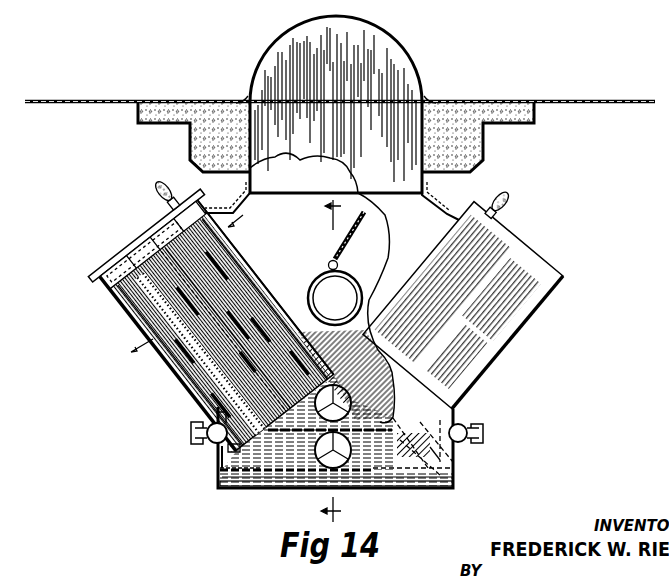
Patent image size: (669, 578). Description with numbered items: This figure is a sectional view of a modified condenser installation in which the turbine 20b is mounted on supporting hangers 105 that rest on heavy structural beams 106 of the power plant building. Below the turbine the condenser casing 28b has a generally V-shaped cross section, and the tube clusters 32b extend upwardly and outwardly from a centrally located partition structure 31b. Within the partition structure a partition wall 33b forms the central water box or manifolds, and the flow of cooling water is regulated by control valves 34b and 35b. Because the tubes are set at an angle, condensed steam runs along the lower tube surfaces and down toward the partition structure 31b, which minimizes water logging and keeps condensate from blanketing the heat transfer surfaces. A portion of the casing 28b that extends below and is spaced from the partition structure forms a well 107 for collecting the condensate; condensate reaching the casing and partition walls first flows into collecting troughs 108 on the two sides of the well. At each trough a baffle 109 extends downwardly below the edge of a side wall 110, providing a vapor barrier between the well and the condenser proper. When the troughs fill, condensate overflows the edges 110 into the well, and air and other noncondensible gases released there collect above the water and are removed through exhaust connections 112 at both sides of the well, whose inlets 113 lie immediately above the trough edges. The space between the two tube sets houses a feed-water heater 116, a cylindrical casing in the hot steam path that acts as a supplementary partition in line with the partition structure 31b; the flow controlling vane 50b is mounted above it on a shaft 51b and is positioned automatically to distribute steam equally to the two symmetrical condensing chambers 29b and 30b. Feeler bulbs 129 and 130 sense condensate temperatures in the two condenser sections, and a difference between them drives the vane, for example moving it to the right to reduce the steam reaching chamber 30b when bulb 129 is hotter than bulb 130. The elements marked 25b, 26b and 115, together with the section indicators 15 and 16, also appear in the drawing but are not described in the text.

The supporting hangers 105 is at (246, 100).
The structural beams 106 is at (193, 150).
The turbine 20b is at (343, 156).
The insulation cloud 25b is at (275, 192).
The right duct 26b is at (425, 208).
The section indicator 16 is at (190, 281).
The condensing chamber 29b is at (262, 238).
The section line 15 is at (340, 359).
The condensing chamber 30b is at (376, 232).
The flow controlling vane 50b is at (360, 239).
The shaft of the vane 51b is at (378, 268).
The tube clusters 32b is at (273, 305).
The feed-water heater 116 is at (335, 298).
The partition structure 31b is at (352, 352).
The condenser casing 28b is at (137, 309).
The stippled band 115 is at (188, 358).
The control valve 34b is at (355, 402).
The partition wall 33b is at (384, 419).
The control valve 35b is at (371, 478).
The feeder bulb 129 is at (448, 475).
The collecting troughs 108 is at (260, 486).
The well 107 is at (227, 487).
The exhaust connections 112 is at (188, 432).
The inlets 113 is at (215, 413).
The baffle 109 is at (227, 447).
The side wall of the trough 110 is at (222, 463).
The feeder bulb 130 is at (222, 480).